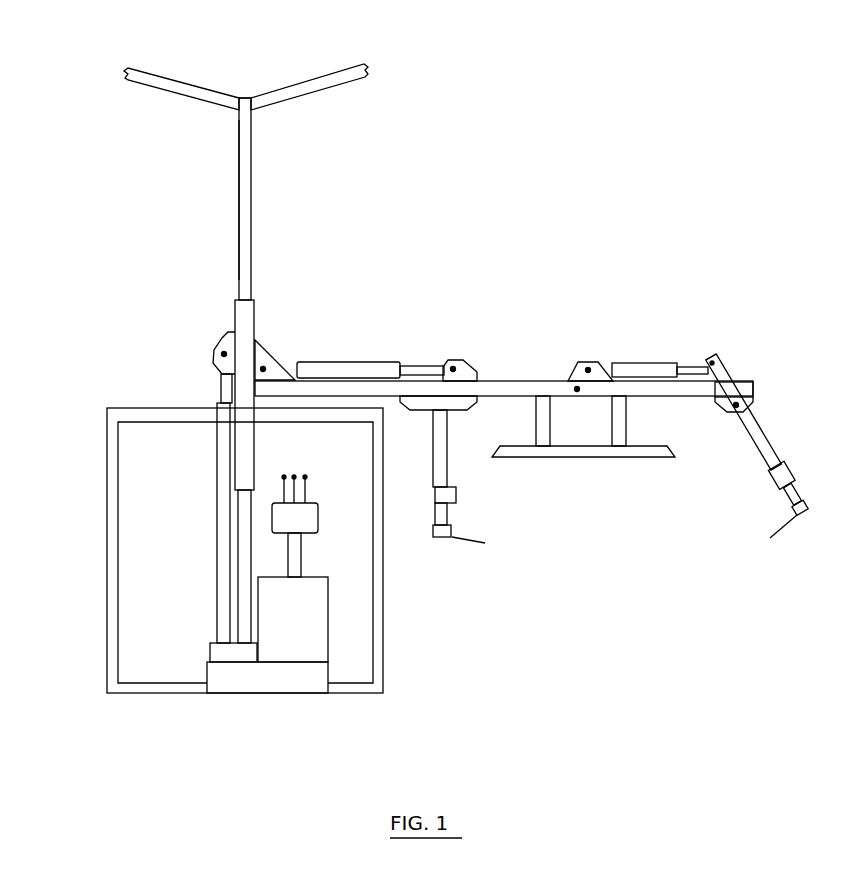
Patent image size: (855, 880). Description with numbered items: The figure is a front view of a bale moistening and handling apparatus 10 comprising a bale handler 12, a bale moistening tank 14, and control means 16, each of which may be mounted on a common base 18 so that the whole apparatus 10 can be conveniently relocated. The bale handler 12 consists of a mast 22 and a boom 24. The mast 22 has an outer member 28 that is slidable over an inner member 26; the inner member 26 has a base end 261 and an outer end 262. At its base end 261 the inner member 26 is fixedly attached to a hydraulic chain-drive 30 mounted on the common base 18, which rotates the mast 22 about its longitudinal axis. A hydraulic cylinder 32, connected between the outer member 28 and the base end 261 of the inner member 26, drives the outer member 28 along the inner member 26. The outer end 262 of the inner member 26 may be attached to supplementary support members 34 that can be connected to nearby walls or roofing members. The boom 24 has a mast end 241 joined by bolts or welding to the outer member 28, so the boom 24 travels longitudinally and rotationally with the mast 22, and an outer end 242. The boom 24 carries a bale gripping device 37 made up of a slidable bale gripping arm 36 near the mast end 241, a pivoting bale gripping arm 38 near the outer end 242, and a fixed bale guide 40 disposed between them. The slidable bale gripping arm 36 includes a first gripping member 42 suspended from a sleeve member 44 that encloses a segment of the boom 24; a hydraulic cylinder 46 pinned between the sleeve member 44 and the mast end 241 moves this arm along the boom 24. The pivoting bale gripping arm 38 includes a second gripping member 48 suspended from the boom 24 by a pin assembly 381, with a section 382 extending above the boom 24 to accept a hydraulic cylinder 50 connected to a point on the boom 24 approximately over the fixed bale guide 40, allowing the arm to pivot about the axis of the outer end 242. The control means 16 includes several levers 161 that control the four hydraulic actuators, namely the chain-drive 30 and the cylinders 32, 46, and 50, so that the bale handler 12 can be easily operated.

The bale moistening and handling apparatus 10 is at (54, 791).
The bale handler 12 is at (452, 282).
The bale moistening tank 14 is at (107, 510).
The control means 16 is at (312, 590).
The levers 161 is at (308, 489).
The common base 18 is at (292, 693).
The mast 22 is at (238, 151).
The boom 24 is at (500, 380).
The inner member 26 is at (245, 139).
The outer member 28 is at (248, 305).
The hydraulic chain-drive 30 is at (223, 653).
The hydraulic cylinder 32 is at (222, 458).
The supplementary support members 34 is at (345, 77).
The slidable bale gripping arm 36 is at (440, 446).
The bale gripping device 37 is at (643, 535).
The pivoting bale gripping arm 38 is at (770, 455).
The fixed bale guide 40 is at (596, 450).
The first gripping member 42 is at (453, 540).
The sleeve member 44 is at (443, 385).
The hydraulic cylinder 46 is at (340, 368).
The second gripping member 48 is at (802, 520).
The hydraulic cylinder 50 is at (645, 368).
The mast end 241 is at (262, 389).
The outer end 242 is at (745, 385).
The base end 261 is at (243, 608).
The outer end 262 is at (244, 98).
The pin assembly 381 is at (736, 407).
The section 382 is at (716, 356).